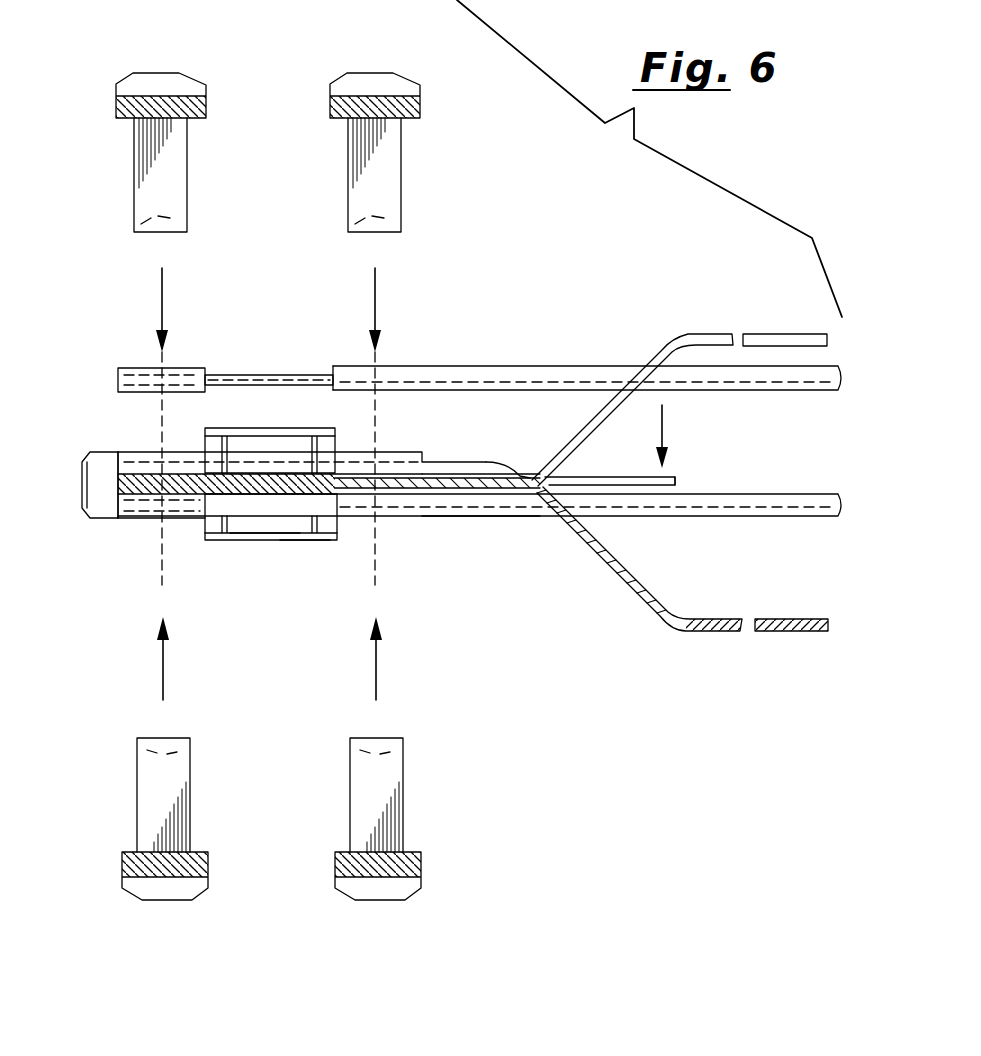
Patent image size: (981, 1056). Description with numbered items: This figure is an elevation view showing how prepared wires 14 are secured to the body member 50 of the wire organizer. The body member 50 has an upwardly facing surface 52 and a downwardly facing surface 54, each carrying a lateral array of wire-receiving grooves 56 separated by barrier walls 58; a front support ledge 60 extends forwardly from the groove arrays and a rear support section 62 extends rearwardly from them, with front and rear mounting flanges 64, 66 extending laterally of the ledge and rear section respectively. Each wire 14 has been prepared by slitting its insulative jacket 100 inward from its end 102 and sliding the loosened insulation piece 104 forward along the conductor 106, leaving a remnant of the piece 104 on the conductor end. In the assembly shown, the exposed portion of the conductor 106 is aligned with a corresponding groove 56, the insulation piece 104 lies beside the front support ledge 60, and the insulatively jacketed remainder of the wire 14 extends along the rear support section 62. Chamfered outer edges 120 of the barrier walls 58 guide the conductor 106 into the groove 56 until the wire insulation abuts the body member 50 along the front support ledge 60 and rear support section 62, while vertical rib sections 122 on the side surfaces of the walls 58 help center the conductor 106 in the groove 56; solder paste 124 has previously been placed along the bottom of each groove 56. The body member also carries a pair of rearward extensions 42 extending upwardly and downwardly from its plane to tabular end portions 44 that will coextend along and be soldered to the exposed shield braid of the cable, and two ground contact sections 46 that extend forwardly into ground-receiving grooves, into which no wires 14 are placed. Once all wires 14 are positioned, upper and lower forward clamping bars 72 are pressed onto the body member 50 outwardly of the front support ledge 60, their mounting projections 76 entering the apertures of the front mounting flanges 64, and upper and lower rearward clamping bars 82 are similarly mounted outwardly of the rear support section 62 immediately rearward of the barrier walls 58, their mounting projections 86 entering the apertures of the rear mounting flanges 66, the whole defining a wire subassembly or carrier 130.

The wire 14 is at (490, 364).
The rearward extension 42 is at (657, 353).
The tabular end portion 44 is at (767, 345).
The ground contact section 46 is at (152, 468).
The body member 50 is at (682, 473).
The upwardly facing surface 52 is at (483, 462).
The downwardly facing surface 54 is at (500, 492).
The wire-receiving groove 56 is at (213, 443).
The barrier wall 58 is at (262, 535).
The front support ledge 60 is at (120, 487).
The rear support section 62 is at (623, 478).
The front mounting flange 64 is at (88, 462).
The rear mounting flange 66 is at (423, 453).
The forward clamping bar 72 is at (178, 73).
The mounting projection 76 is at (152, 168).
The rearward clamping bar 82 is at (372, 73).
The mounting projection 86 is at (390, 181).
The insulative jacket 100 is at (323, 369).
The end 102 is at (117, 380).
The insulation piece 104 is at (145, 370).
The conductor 106 is at (253, 374).
The chamfered outer edge 120 is at (285, 538).
The vertical rib section 122 is at (333, 523).
The solder paste 124 is at (257, 470).
The wire subassembly 130 is at (135, 575).